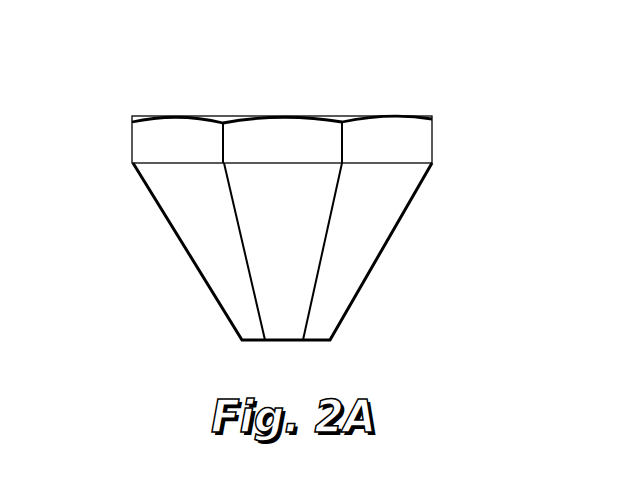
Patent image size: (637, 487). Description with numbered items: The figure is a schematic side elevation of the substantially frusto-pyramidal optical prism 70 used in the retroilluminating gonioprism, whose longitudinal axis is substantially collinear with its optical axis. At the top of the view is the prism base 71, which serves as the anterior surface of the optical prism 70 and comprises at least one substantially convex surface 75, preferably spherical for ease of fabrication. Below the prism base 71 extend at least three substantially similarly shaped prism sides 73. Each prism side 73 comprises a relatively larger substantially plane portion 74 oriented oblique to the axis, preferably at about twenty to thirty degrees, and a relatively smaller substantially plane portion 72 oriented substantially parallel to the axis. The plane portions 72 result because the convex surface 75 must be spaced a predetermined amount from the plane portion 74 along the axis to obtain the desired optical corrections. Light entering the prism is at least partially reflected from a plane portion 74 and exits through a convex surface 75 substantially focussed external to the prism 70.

The optical prism 70 is at (291, 182).
The prism base 71 is at (280, 117).
The substantially plane portion 72 is at (293, 148).
The prism side 73 is at (333, 227).
The substantially plane portion 74 is at (295, 258).
The substantially convex surface 75 is at (395, 115).